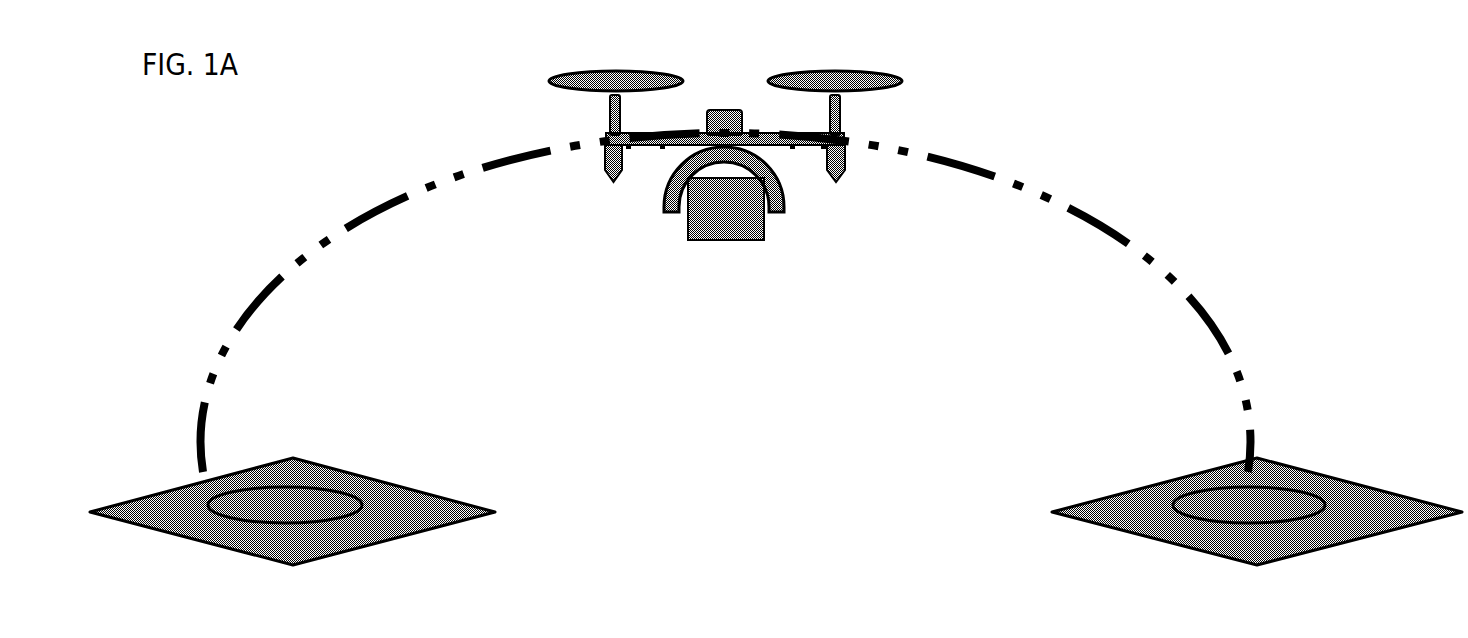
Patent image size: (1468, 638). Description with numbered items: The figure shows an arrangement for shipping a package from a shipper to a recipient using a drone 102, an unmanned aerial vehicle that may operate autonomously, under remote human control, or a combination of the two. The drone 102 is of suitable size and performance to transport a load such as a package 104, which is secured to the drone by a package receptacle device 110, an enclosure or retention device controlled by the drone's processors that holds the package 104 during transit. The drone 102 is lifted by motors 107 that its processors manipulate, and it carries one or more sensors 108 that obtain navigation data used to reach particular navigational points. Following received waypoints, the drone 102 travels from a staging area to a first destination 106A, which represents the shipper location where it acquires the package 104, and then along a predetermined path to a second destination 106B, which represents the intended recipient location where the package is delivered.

The drone 102 is at (735, 162).
The package 104 is at (767, 251).
The first destination 106A is at (292, 536).
The second destination 106B is at (1257, 536).
The motors 107 is at (545, 48).
The sensors 108 is at (584, 172).
The package receptacle device 110 is at (644, 222).